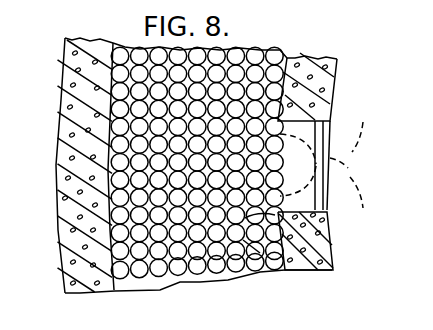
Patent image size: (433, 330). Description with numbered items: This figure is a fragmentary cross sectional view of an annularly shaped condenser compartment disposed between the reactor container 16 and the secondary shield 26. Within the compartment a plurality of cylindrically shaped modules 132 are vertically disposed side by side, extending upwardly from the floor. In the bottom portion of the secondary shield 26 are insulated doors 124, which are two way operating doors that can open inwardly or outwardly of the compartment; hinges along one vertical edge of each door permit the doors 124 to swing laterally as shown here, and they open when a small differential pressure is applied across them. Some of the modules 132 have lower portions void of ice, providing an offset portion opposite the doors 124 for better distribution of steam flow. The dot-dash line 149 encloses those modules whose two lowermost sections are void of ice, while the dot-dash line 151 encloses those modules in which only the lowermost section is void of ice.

The reactor container 16 is at (72, 84).
The secondary shield 26 is at (317, 88).
The insulated doors 124 is at (322, 187).
The cylindrically shaped modules 132 is at (228, 266).
The dot-dash line 149 is at (328, 228).
The dot-dash line 151 is at (270, 272).